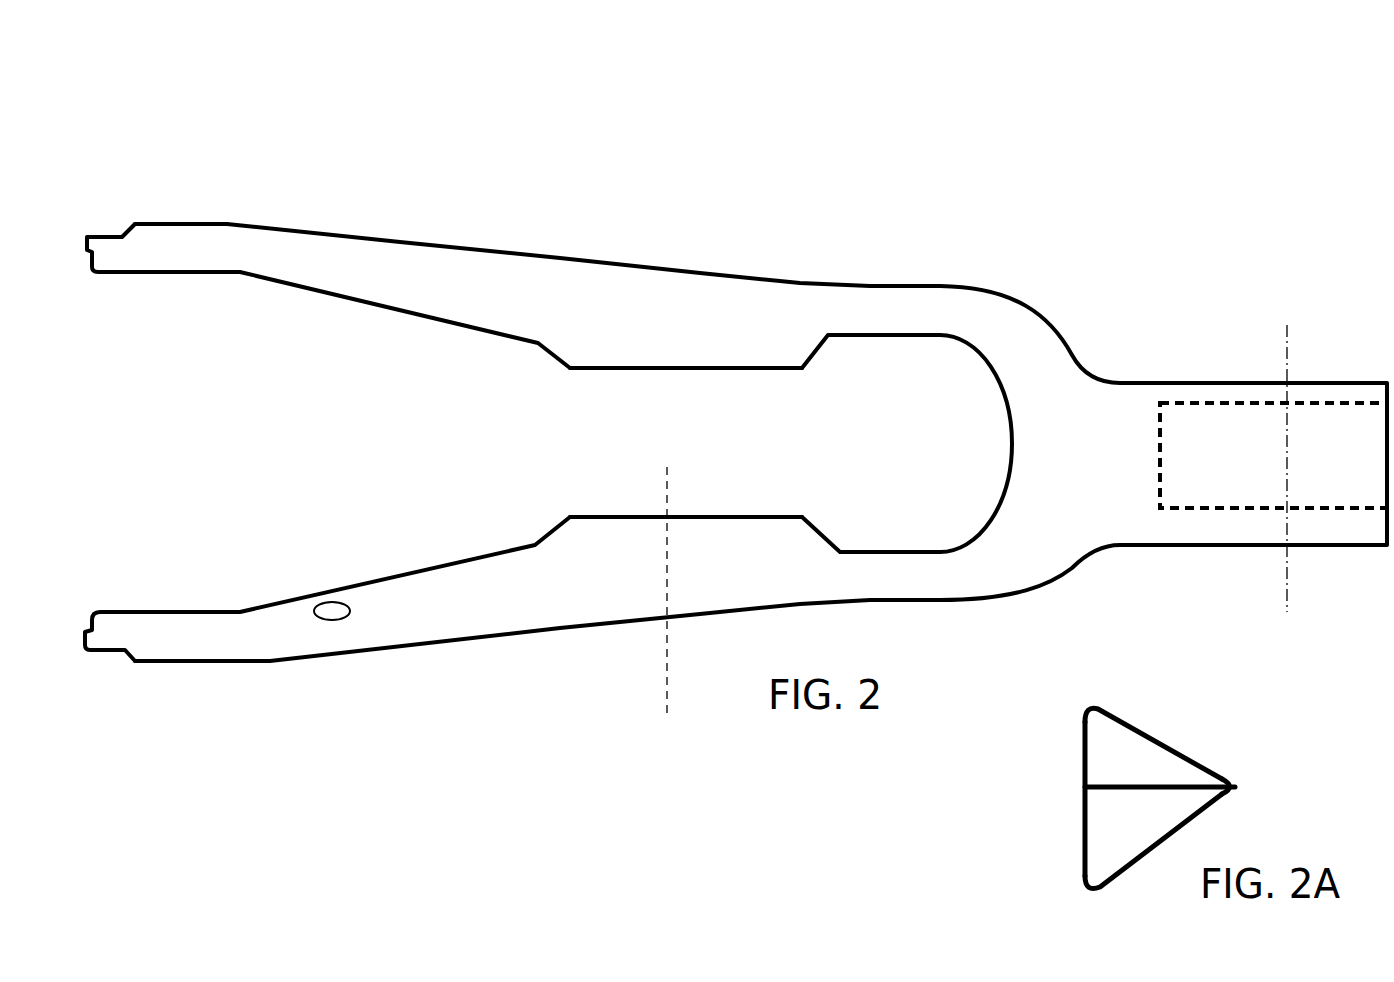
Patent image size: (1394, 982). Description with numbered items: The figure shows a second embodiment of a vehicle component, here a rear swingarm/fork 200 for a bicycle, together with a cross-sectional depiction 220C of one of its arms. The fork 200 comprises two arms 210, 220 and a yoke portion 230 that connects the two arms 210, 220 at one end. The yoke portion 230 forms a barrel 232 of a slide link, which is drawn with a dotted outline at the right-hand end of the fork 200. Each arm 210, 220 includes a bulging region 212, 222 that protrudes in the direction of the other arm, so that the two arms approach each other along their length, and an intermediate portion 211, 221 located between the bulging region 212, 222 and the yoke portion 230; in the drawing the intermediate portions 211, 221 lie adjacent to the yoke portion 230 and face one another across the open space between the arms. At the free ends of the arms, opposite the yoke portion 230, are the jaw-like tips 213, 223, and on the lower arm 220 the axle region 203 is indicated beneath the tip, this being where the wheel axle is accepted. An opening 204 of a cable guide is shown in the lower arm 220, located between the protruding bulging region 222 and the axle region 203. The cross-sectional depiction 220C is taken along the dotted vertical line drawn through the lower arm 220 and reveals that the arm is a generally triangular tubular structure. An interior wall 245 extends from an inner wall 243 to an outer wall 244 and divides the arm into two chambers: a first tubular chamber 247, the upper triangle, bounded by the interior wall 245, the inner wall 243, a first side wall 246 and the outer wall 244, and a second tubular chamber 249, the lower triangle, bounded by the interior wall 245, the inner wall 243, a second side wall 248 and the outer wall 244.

In FIG. 2, the rear swingarm/fork 200 is at (1270, 172).
In FIG. 2, the axle region 203 is at (78, 677).
In FIG. 2, the opening of cable guide 204 is at (322, 603).
In FIG. 2, the arm 210 is at (454, 302).
In FIG. 2, the intermediate portion 211 is at (887, 358).
In FIG. 2, the bulging region 212 is at (709, 384).
In FIG. 2, the upper jaw tip 213 is at (109, 290).
In FIG. 2, the arm 220 is at (454, 612).
In FIG. 2, the intermediate portion 221 is at (893, 535).
In FIG. 2, the bulging region 222 is at (630, 498).
In FIG. 2, the lower jaw tip 223 is at (110, 597).
In FIG. 2, the yoke portion 230 is at (1385, 225).
In FIG. 2, the barrel 232 is at (1327, 510).
In FIG. 2A, the cross-sectional depiction 220C is at (1200, 720).
In FIG. 2A, the inner wall 243 is at (1237, 780).
In FIG. 2A, the outer wall 244 is at (1083, 812).
In FIG. 2A, the interior wall 245 is at (1112, 785).
In FIG. 2A, the first side wall 246 is at (1163, 737).
In FIG. 2A, the first tubular chamber 247 is at (1117, 771).
In FIG. 2A, the second side wall 248 is at (1187, 835).
In FIG. 2A, the second tubular chamber 249 is at (1117, 838).